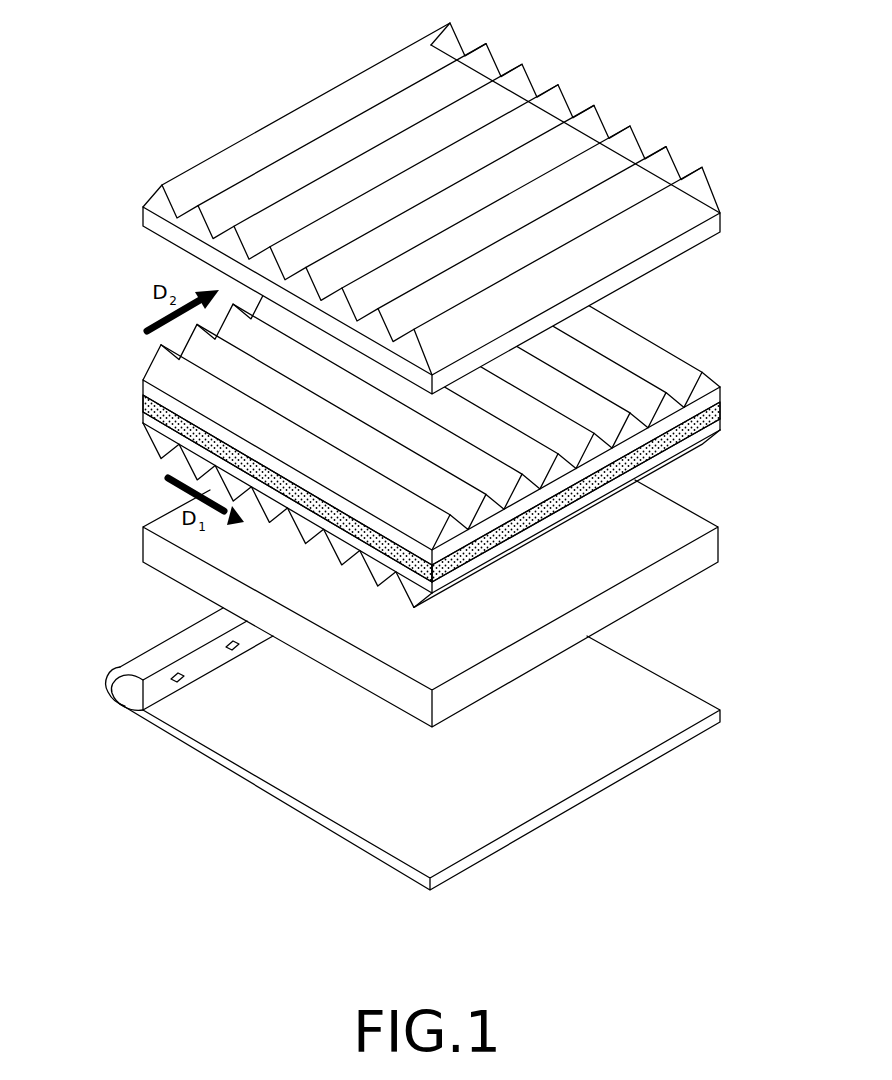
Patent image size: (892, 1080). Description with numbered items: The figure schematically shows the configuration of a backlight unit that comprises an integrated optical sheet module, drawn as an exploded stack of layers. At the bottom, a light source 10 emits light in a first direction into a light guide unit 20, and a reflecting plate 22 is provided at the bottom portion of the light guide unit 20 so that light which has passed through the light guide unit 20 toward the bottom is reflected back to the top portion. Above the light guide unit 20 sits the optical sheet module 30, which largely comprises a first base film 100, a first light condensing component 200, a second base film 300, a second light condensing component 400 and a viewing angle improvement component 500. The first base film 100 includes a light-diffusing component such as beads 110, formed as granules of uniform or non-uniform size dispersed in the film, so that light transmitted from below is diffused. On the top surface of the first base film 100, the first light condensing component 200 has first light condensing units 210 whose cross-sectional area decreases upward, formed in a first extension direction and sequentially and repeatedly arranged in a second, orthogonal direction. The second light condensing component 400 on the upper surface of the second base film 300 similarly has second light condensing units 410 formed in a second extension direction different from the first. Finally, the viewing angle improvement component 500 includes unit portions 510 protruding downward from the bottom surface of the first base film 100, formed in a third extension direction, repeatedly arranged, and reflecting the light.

The light source 10 is at (180, 652).
The light guide unit 20 is at (708, 547).
The reflecting plate 22 is at (672, 697).
The optical sheet module 30 is at (460, 308).
The first base film 100 is at (730, 406).
The bead 110 is at (710, 430).
The first light condensing component 200 is at (496, 397).
The first light condensing unit 210 is at (653, 357).
The second base film 300 is at (712, 244).
The second light condensing component 400 is at (446, 199).
The second light condensing unit 410 is at (618, 180).
The viewing angle improvement component 500 is at (370, 515).
The unit portion 510 is at (148, 430).